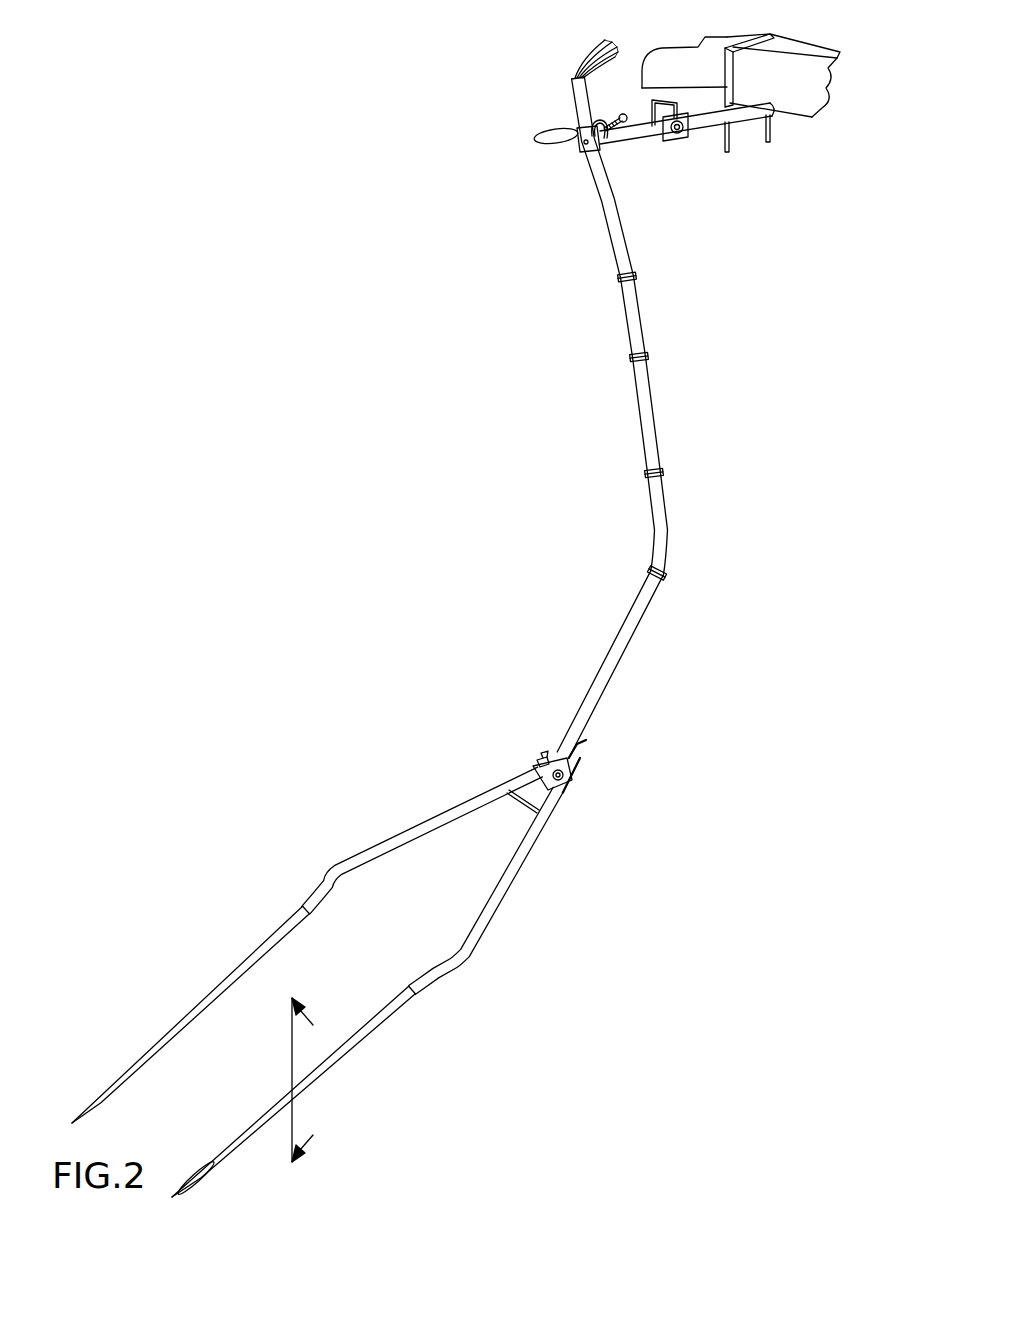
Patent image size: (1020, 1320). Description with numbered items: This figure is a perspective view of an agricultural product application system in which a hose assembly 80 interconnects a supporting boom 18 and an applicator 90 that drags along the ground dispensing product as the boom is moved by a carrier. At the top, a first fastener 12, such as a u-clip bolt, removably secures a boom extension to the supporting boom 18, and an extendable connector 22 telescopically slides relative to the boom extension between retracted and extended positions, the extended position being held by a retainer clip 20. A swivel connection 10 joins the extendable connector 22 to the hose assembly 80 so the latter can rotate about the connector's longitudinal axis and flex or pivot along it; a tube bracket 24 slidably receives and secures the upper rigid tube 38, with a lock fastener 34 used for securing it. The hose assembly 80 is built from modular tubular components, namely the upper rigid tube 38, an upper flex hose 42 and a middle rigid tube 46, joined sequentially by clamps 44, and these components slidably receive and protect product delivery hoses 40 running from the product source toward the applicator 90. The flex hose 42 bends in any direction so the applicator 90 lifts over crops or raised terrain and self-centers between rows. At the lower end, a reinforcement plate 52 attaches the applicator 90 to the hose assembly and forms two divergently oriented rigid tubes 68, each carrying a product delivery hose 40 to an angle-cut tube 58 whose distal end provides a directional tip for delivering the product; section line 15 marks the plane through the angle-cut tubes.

The swivel connection 10 is at (492, 103).
The first fastener 12 is at (722, 79).
The section line 15 is at (313, 1103).
The supporting boom 18 is at (797, 118).
The retainer clip 20 is at (702, 113).
The extendable connector 22 is at (633, 145).
The tube bracket 24 is at (586, 164).
The lock fastener 34 is at (571, 149).
The upper rigid tube 38 is at (598, 237).
The product delivery hoses 40 is at (578, 42).
The upper flex hose 42 is at (622, 308).
The clamps 44 is at (632, 270).
The middle rigid tube 46 is at (610, 656).
The reinforcement plate 52 is at (521, 796).
The angle-cut tubes 58 is at (155, 1033).
The rigid tubes 68 is at (420, 820).
The hose assembly 80 is at (443, 415).
The applicator 90 is at (245, 840).